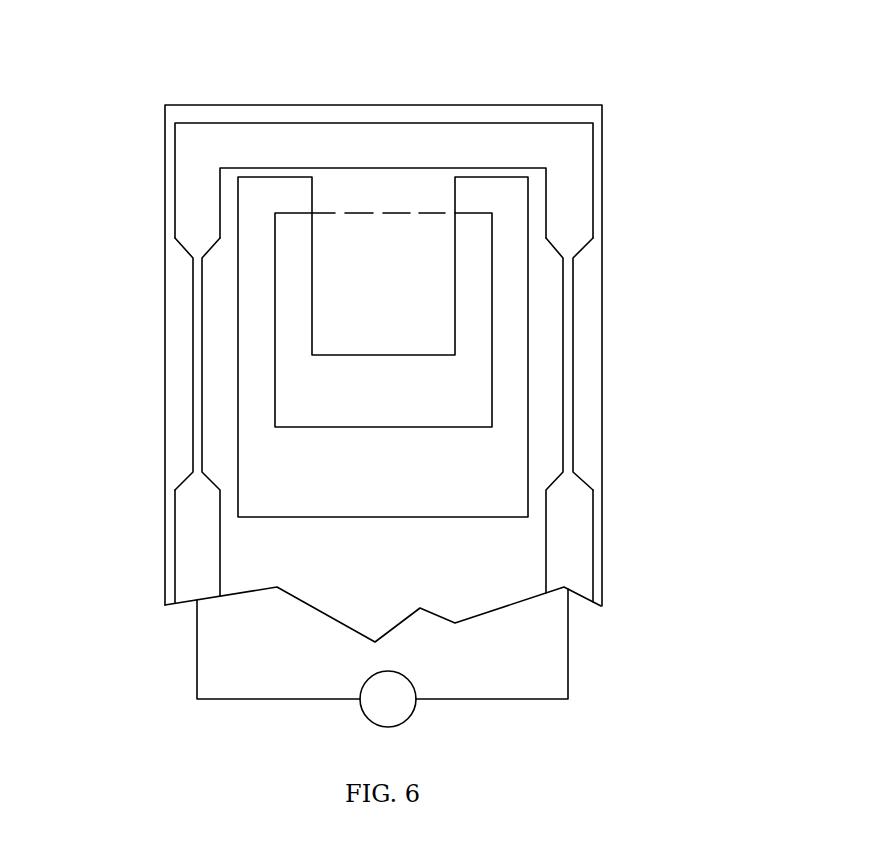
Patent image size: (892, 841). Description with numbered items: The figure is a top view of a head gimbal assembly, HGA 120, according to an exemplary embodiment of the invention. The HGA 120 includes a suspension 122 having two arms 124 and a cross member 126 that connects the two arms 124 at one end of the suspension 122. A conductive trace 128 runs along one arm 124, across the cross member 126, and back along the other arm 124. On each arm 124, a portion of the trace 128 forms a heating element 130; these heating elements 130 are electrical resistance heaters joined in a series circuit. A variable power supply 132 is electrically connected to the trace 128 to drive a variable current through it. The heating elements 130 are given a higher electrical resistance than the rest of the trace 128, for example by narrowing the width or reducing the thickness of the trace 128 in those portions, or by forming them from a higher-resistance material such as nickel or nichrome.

The HGA 120 is at (648, 105).
The suspension 122 is at (165, 105).
The arms 124 is at (173, 357).
The cross member 126 is at (388, 115).
The conductive trace 128 is at (200, 195).
The heating element 130 is at (202, 428).
The variable power supply 132 is at (365, 713).